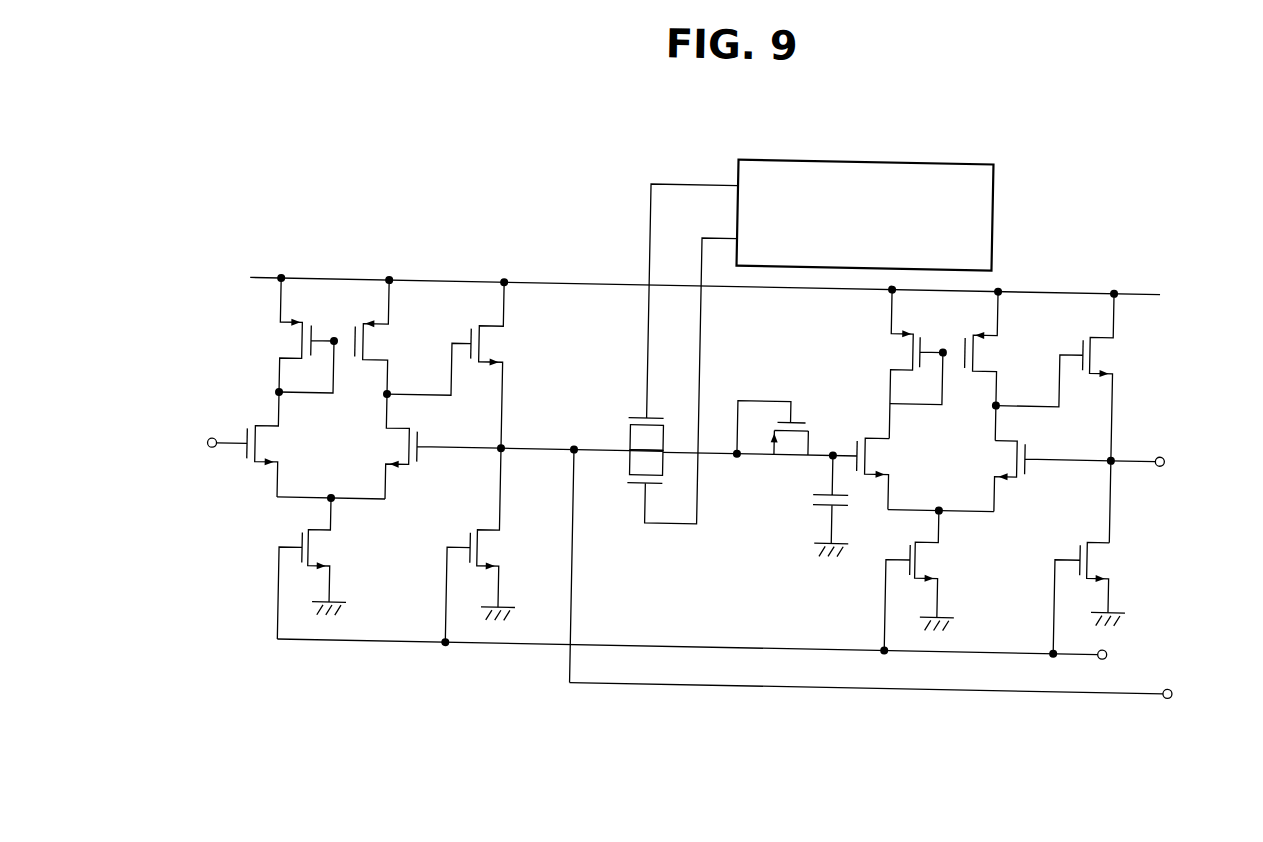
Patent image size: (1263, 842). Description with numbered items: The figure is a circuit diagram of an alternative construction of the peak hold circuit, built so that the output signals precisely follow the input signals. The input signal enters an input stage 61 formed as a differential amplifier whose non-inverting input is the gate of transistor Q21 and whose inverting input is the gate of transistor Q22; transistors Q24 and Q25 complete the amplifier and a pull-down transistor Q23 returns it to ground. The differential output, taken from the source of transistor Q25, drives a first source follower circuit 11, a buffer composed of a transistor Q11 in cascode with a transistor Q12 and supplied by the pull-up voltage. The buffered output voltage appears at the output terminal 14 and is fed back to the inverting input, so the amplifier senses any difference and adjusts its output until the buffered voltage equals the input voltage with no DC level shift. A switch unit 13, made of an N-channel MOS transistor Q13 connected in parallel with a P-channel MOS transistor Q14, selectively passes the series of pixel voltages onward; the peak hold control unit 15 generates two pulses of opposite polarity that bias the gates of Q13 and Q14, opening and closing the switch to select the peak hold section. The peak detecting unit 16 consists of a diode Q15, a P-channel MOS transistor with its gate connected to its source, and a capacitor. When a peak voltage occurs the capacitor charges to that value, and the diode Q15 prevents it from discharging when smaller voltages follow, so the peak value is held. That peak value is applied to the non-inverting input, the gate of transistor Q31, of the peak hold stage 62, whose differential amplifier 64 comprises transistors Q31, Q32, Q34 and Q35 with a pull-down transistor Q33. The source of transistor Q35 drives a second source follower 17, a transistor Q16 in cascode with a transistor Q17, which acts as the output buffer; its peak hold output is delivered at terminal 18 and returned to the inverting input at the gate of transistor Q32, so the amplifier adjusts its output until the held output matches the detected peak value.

The source follower circuit 11 is at (397, 460).
The switch unit 13 is at (731, 359).
The output terminal Vout 14 is at (1172, 690).
The peak hold control unit 15 is at (937, 158).
The peak detecting unit 16 is at (753, 521).
The second source follower 17 is at (1055, 473).
The peak hold output terminal PHout 18 is at (1160, 458).
The input stage 61 is at (250, 628).
The peak hold stage 62 is at (1112, 247).
The differential amplifier 64 is at (383, 525).
The transistor Q11 is at (500, 365).
The transistor Q12 is at (486, 545).
The N-channel MOS transistor Q13 is at (626, 443).
The P-channel MOS transistor Q14 is at (627, 468).
The diode Q15 is at (772, 442).
The transistor Q16 is at (1110, 418).
The transistor Q17 is at (1095, 599).
The transistor Q21 is at (274, 444).
The transistor Q22 is at (429, 447).
The pull-down transistor Q23 is at (317, 568).
The transistor Q24 is at (296, 335).
The transistor Q25 is at (385, 336).
The transistor Q31 is at (883, 474).
The transistor Q32 is at (1037, 477).
The pull-down transistor Q33 is at (924, 581).
The transistor Q34 is at (904, 364).
The transistor Q35 is at (993, 366).